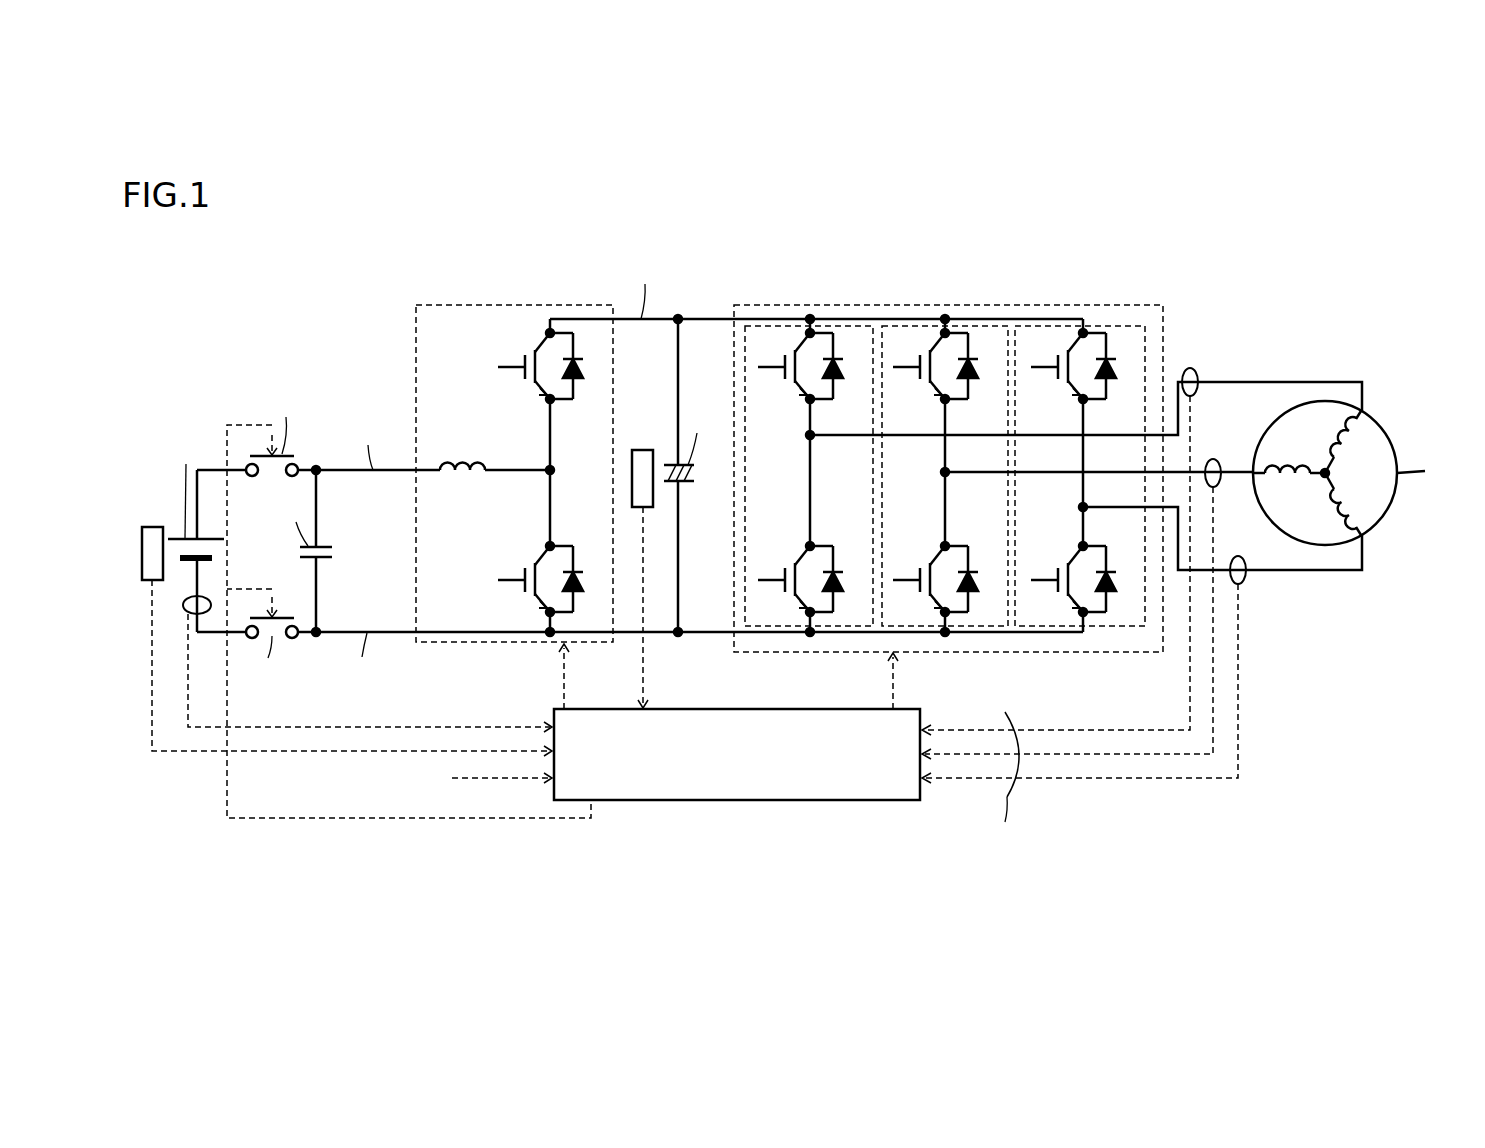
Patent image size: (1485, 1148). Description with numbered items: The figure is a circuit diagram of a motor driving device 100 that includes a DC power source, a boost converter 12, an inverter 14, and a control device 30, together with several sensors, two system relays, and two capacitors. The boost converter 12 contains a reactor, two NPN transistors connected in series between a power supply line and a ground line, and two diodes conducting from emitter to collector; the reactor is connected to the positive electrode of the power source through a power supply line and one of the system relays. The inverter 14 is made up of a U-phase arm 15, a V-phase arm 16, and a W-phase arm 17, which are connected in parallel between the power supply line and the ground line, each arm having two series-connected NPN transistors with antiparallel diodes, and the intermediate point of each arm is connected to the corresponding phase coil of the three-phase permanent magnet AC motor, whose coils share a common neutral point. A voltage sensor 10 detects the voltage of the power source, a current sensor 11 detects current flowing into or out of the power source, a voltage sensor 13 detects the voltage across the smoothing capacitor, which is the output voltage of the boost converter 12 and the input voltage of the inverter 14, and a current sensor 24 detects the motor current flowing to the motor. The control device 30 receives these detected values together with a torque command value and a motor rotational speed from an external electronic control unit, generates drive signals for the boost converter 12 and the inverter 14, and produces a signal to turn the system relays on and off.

The motor driving device 100 is at (1177, 249).
The voltage sensor 10 is at (151, 527).
The current sensor 11 is at (184, 606).
The boost converter 12 is at (416, 340).
The voltage sensor 13 is at (643, 450).
The inverter 14 is at (948, 483).
The U-phase arm 15 is at (848, 326).
The V-phase arm 16 is at (983, 326).
The W-phase arm 17 is at (1120, 326).
The current sensor 24 is at (1238, 556).
The control device 30 is at (770, 800).